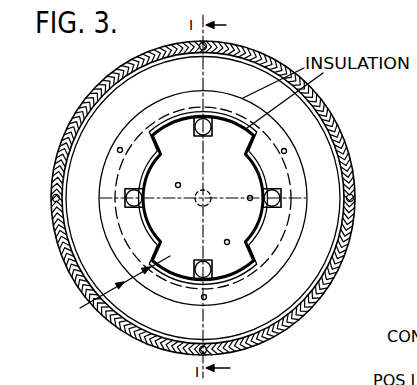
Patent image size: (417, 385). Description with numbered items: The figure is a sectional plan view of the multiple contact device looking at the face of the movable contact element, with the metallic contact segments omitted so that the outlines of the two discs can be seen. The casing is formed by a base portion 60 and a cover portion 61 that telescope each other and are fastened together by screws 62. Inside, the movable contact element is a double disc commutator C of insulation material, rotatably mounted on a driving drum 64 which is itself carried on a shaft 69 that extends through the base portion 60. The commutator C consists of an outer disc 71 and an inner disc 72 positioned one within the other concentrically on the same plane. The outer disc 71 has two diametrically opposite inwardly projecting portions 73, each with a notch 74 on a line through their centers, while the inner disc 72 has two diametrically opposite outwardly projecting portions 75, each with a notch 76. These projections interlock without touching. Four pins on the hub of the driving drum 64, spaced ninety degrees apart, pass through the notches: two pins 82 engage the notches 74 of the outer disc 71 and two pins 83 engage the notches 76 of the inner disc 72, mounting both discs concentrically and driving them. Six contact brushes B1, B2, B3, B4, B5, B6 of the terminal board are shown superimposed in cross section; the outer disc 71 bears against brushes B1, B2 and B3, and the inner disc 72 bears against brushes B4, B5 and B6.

The base portion 60 is at (352, 232).
The cover portion 61 is at (345, 145).
The screws 62 is at (199, 44).
The driving drum 64 is at (290, 225).
The shaft 69 is at (200, 204).
The outer disc 71 is at (100, 233).
The inner disc 72 is at (160, 221).
The inwardly projecting portions 73 is at (128, 175).
The notch 74 is at (116, 203).
The outwardly projecting portions 75 is at (167, 142).
The notch 76 is at (182, 123).
The pins 82 is at (124, 186).
The pins 83 is at (207, 118).
The contact brush B1 is at (286, 149).
The contact brush B2 is at (204, 299).
The contact brush B3 is at (118, 148).
The contact brush B4 is at (227, 240).
The contact brush B5 is at (249, 197).
The contact brush B6 is at (178, 183).
The double disc commutator C is at (117, 287).